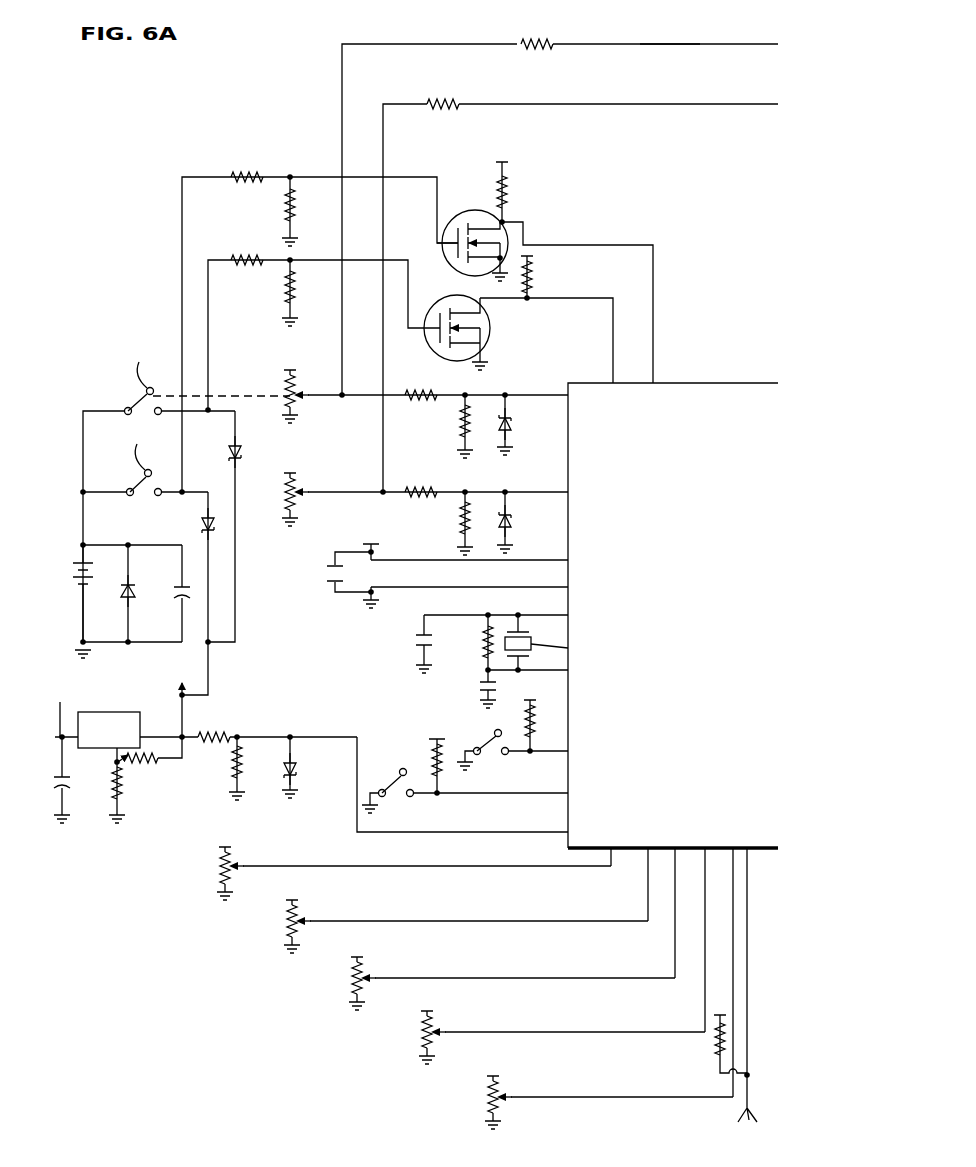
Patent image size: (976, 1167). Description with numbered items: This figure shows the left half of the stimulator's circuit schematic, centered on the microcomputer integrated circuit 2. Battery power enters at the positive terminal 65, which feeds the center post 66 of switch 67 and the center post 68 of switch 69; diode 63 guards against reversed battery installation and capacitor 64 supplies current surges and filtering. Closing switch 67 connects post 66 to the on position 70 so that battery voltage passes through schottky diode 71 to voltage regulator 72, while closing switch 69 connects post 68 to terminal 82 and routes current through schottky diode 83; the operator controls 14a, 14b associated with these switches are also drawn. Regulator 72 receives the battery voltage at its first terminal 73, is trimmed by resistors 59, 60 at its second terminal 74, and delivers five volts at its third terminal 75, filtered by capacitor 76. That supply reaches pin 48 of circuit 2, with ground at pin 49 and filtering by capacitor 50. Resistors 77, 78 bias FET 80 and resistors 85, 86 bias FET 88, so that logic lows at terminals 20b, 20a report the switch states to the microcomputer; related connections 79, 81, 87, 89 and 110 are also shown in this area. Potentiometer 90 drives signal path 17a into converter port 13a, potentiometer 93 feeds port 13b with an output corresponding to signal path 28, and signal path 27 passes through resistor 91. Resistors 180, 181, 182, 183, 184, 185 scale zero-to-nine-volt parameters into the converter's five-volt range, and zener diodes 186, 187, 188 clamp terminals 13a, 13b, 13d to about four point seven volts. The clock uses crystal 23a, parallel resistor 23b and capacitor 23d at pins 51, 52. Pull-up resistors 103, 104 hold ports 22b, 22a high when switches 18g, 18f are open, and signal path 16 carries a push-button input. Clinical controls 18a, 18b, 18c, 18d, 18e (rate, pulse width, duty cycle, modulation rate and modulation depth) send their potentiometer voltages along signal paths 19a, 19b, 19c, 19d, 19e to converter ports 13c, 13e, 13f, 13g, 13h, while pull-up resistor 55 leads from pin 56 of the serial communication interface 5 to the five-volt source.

The signal path 27 is at (376, 44).
The resistor 91 is at (530, 44).
The pull-up resistor 104 is at (638, 44).
The line 110 is at (577, 104).
The signal path 28 is at (386, 152).
The resistor 85 is at (244, 174).
The resistor 86 is at (283, 207).
The resistor 77 is at (244, 258).
The resistor 78 is at (283, 296).
The FET 88 is at (470, 211).
The gate 87 is at (442, 250).
The resistor 89 is at (505, 222).
The resistor 81 is at (531, 301).
The FET 80 is at (491, 328).
The line 79 is at (409, 333).
The resistor 180 is at (426, 388).
The signal path 17a is at (532, 393).
The integrated circuit 2 is at (735, 383).
The terminal 20b is at (613, 390).
The terminal 20a is at (653, 390).
The input port 13a is at (566, 398).
The resistor 181 is at (461, 425).
The zener diode 186 is at (515, 428).
The resistor 182 is at (423, 488).
The analog to digital converter port 13b is at (566, 496).
The resistor 183 is at (458, 525).
The zener diode 187 is at (514, 535).
The pin 48 is at (568, 560).
The capacitor 50 is at (329, 583).
The pin 49 is at (568, 587).
The pin 51 is at (568, 616).
The parallel resistor 23b is at (486, 637).
The capacitor 23d is at (420, 645).
The crystal 23a is at (558, 642).
The pin 52 is at (568, 670).
The pull-up resistor 103 is at (538, 722).
The port 22b is at (560, 751).
The switch 18g is at (488, 758).
The switch 18f is at (391, 796).
The port 22a is at (463, 796).
The signal path 16 is at (532, 832).
The terminal 13d is at (571, 830).
The port 13e is at (609, 847).
The port 13f is at (649, 845).
The port 13g is at (700, 845).
The port 13h is at (680, 841).
The port 13c is at (728, 848).
The serial communication interface 5 is at (749, 848).
The pull-up resistor 55 is at (717, 1048).
The pin 56 is at (742, 1113).
The center post 66 is at (126, 407).
The switch 67 is at (139, 415).
The switch 14a is at (154, 373).
The on position 70 is at (192, 424).
The center post 68 is at (128, 488).
The switch 14b is at (142, 460).
The switch 69 is at (147, 497).
The terminal 82 is at (182, 490).
The schottky diode 71 is at (239, 448).
The schottky diode 83 is at (216, 517).
The positive terminal 65 is at (85, 543).
The diode 63 is at (133, 600).
The capacitor 64 is at (180, 586).
The first terminal 73 is at (157, 736).
The voltage regulator 72 is at (110, 712).
The third terminal 75 is at (63, 734).
The capacitor 76 is at (67, 783).
The resistor 184 is at (214, 731).
The resistor 185 is at (232, 775).
The zener diode 188 is at (284, 768).
The second terminal 74 is at (134, 773).
The resistor 60 is at (158, 765).
The resistor 59 is at (113, 790).
The potentiometer 90 is at (302, 413).
The potentiometer 93 is at (299, 508).
The clinical control 18a is at (483, 1097).
The clinical control 18b is at (416, 1035).
The duty cycle control 18c is at (348, 988).
The modulation rate control 18d is at (286, 930).
The modulation depth control 18e is at (216, 874).
The line 19a is at (603, 1097).
The line 19b is at (552, 1032).
The line 19c is at (507, 978).
The line 19d is at (437, 921).
The line 19e is at (337, 866).